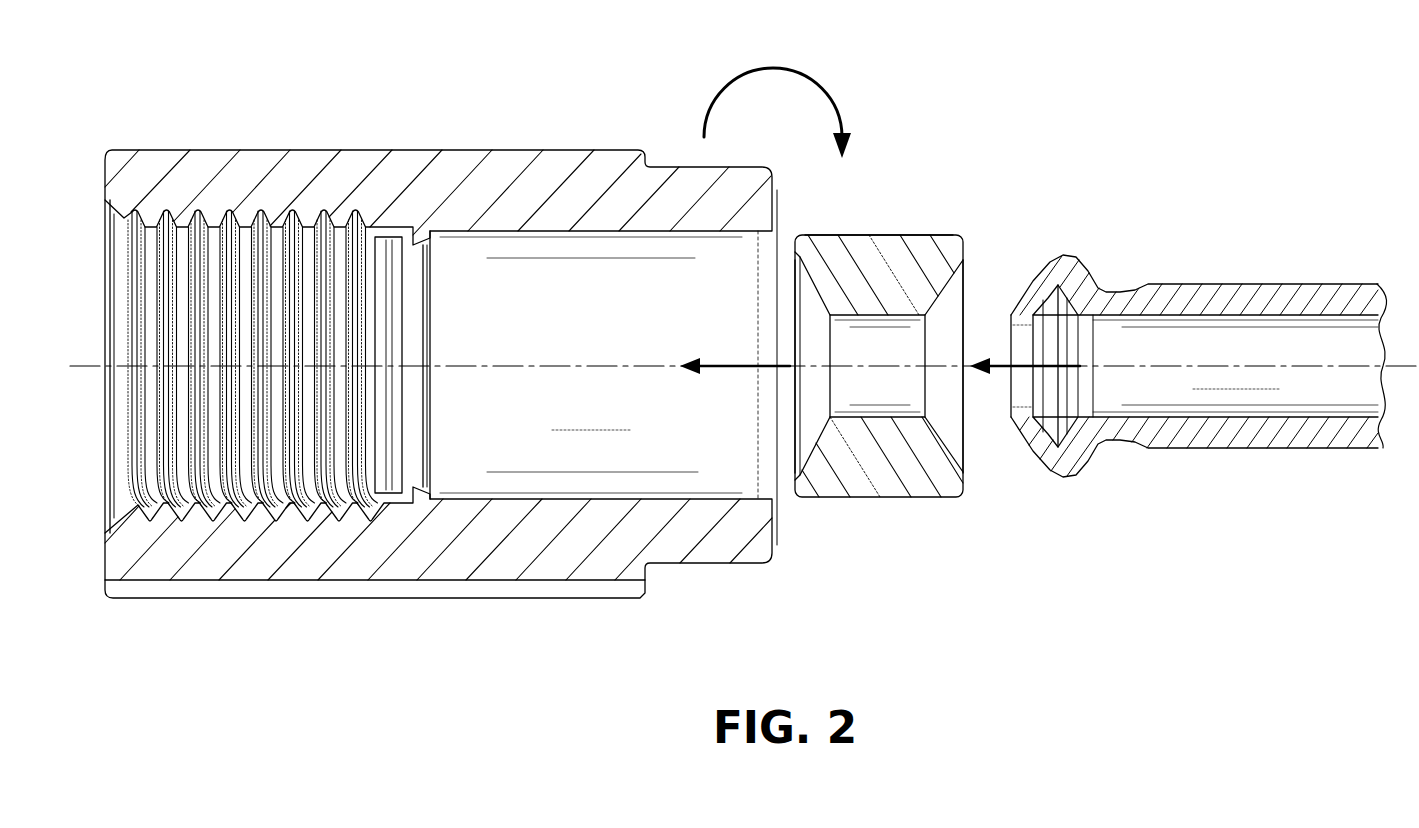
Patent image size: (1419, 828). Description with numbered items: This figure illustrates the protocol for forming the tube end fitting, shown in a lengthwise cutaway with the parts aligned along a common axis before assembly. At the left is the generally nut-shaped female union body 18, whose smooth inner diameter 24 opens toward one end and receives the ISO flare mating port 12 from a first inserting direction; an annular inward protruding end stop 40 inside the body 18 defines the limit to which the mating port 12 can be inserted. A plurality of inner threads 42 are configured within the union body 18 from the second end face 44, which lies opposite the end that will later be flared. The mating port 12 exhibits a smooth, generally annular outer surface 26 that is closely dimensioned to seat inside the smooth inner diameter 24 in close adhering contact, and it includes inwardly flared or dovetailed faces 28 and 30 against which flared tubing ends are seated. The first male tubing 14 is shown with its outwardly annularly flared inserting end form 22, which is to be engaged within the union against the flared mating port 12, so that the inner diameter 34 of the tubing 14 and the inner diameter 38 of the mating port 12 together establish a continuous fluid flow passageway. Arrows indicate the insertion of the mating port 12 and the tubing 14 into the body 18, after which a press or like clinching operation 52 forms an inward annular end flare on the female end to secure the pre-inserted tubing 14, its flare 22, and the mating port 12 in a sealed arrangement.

The ISO flare mating port 12 is at (880, 478).
The first male tubing 14 is at (1217, 448).
The female union body 18 is at (537, 185).
The flared inserting end form 22 is at (1058, 263).
The smooth inner diameter 24 is at (635, 240).
The annular outer surface 26 is at (878, 234).
The inwardly flared face 28 is at (967, 287).
The inwardly flared face 30 is at (797, 285).
The inner diameter of first tubing 34 is at (1243, 325).
The inner diameter of mating port 38 is at (875, 413).
The end stop 40 is at (428, 249).
The inner threads 42 is at (238, 243).
The second end face 44 is at (104, 181).
The press or clinching operation 52 is at (798, 72).